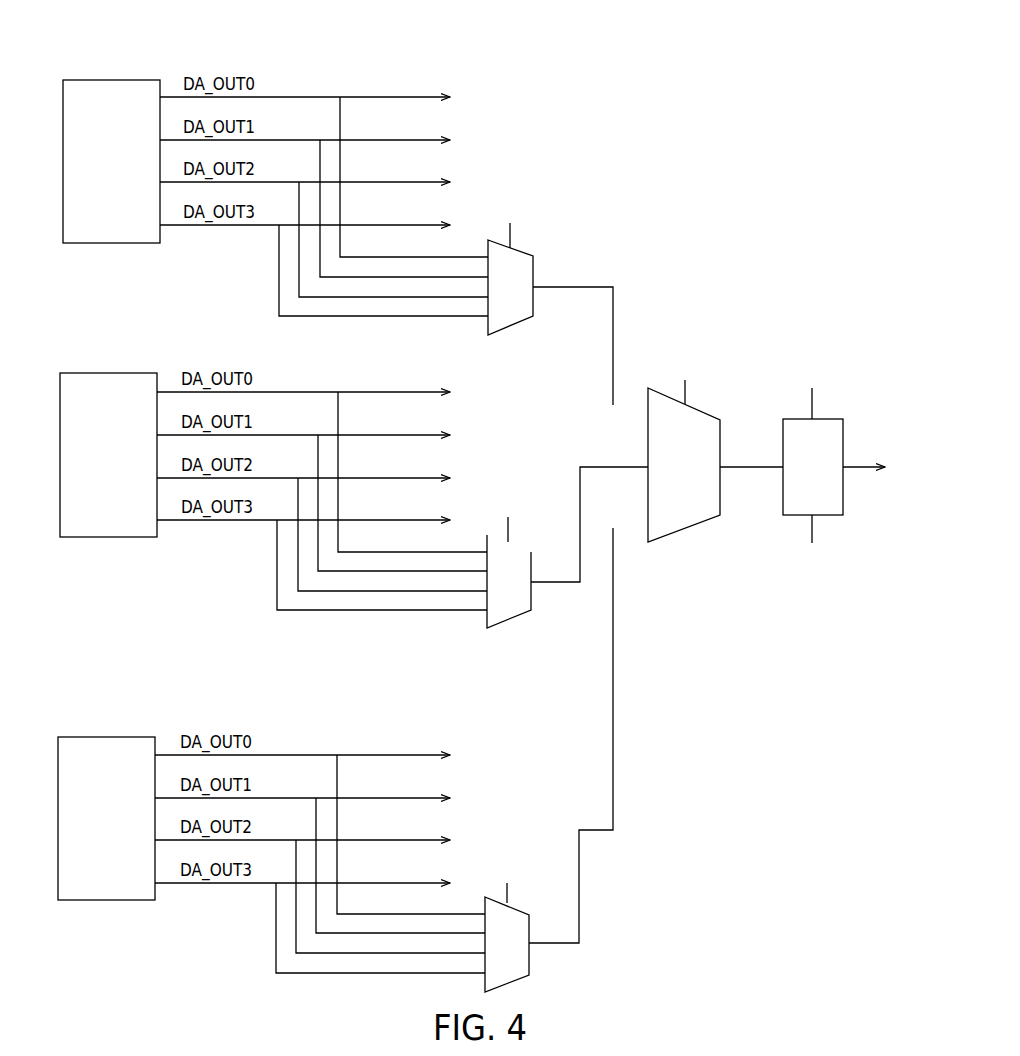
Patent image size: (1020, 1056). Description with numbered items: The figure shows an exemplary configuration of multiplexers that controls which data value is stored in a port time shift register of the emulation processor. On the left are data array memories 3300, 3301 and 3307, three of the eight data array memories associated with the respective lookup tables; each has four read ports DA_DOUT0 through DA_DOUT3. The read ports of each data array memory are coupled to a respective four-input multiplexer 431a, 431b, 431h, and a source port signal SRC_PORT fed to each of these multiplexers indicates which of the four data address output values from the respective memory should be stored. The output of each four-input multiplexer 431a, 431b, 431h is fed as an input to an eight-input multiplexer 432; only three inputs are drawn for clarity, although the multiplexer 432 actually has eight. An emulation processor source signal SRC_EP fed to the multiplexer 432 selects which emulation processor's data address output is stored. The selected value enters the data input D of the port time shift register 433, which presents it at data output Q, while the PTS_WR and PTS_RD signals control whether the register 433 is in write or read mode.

The data array memory 3300 is at (110, 80).
The data array memory 3301 is at (107, 373).
The data array memory 3307 is at (103, 737).
The 4-input multiplexer 431a is at (533, 298).
The 4-input multiplexer 431b is at (531, 596).
The 4-input multiplexer 431h is at (529, 958).
The 8-input multiplexer 432 is at (720, 490).
The port time shift register 433 is at (843, 497).